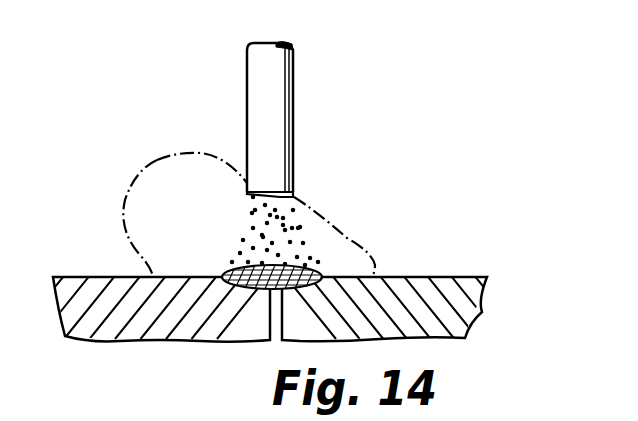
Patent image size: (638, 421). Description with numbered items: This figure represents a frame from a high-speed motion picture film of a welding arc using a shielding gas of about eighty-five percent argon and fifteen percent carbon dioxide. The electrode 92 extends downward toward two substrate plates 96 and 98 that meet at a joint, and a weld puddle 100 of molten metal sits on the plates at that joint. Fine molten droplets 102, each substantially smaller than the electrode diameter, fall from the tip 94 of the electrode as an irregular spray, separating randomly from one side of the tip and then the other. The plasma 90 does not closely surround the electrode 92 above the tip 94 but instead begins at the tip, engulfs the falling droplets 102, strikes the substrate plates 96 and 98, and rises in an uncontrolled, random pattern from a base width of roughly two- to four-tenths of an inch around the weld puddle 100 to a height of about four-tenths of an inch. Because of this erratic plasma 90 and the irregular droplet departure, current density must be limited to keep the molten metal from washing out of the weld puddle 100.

The plasma 90 is at (157, 160).
The electrode 92 is at (278, 82).
The tip 94 is at (296, 187).
The substrate plate 96 is at (138, 327).
The substrate plate 98 is at (453, 323).
The weld puddle 100 is at (230, 270).
The droplets 102 is at (313, 260).